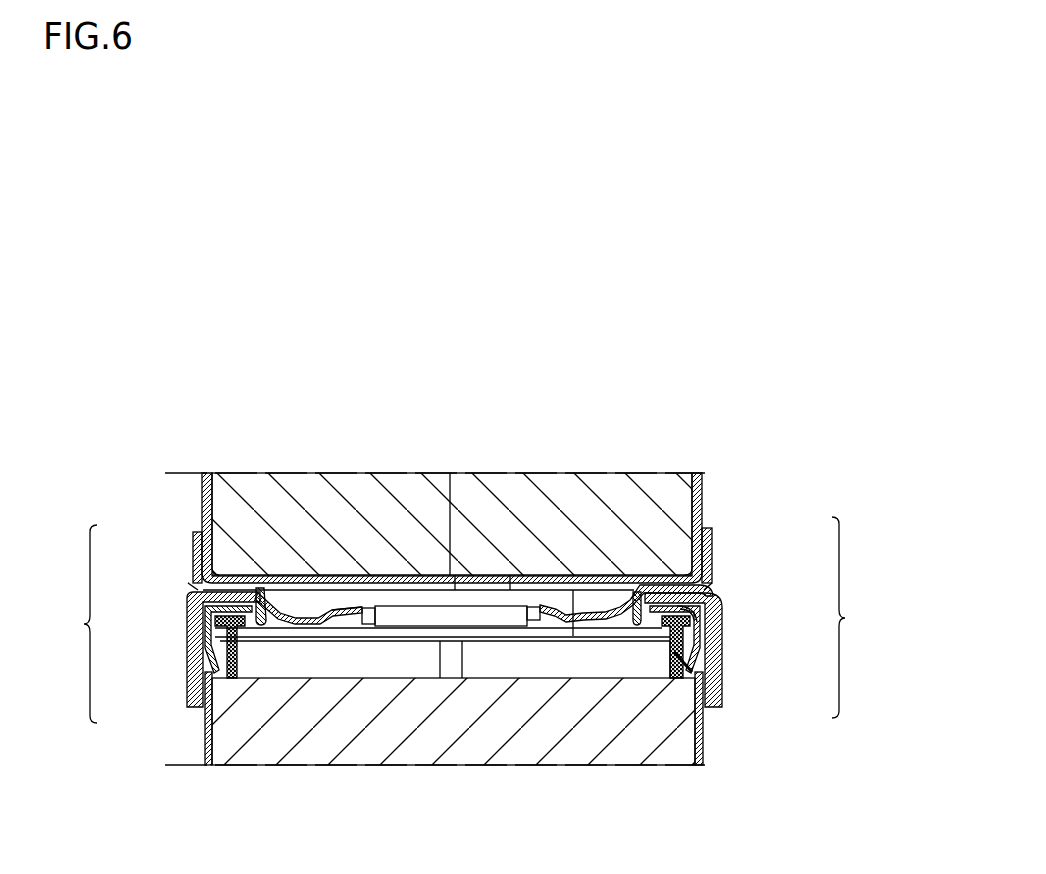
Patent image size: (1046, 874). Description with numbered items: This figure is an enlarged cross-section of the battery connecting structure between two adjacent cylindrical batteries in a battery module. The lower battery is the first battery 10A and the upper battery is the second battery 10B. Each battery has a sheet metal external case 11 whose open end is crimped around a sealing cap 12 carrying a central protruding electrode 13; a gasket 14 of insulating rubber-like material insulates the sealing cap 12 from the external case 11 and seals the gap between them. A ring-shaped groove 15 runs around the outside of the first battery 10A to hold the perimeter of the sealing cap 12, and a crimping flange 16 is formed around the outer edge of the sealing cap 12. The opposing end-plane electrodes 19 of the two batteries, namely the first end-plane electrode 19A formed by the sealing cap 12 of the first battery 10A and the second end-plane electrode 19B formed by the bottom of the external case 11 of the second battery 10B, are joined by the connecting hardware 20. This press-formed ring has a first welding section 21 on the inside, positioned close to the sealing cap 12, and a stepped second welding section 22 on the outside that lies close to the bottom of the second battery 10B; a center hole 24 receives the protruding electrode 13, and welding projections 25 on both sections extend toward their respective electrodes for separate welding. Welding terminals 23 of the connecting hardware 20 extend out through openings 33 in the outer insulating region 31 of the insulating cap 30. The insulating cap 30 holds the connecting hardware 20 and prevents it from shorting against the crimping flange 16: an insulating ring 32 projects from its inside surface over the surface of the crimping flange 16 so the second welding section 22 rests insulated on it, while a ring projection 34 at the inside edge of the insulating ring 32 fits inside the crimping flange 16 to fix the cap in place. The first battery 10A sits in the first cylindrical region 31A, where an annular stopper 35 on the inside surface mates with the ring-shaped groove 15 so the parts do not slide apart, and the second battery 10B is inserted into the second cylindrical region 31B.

The first battery 10A is at (712, 746).
The second battery 10B is at (706, 483).
The external case 11 is at (704, 492).
The sealing cap 12 is at (440, 735).
The protruding electrode 13 is at (430, 612).
The gasket 14 is at (620, 645).
The ring-shaped groove 15 is at (666, 660).
The crimping flange 16 is at (698, 625).
The end-plane electrodes 19 is at (555, 382).
The first end-plane electrode 19A is at (508, 592).
The second end-plane electrode 19B is at (455, 590).
The connecting hardware 20 is at (318, 596).
The first welding section 21 is at (340, 630).
The second welding section 22 is at (224, 582).
The welding terminals 23 is at (204, 658).
The center hole 24 is at (365, 603).
The welding projections 25 is at (270, 596).
The insulating cap 30 is at (168, 520).
The outer insulating region 31 is at (463, 620).
The first cylindrical region 31A is at (190, 690).
The second cylindrical region 31B is at (192, 555).
The insulating ring 32 is at (630, 598).
The openings 33 is at (184, 590).
The ring projection 34 is at (573, 590).
The annular stopper 35 is at (680, 700).